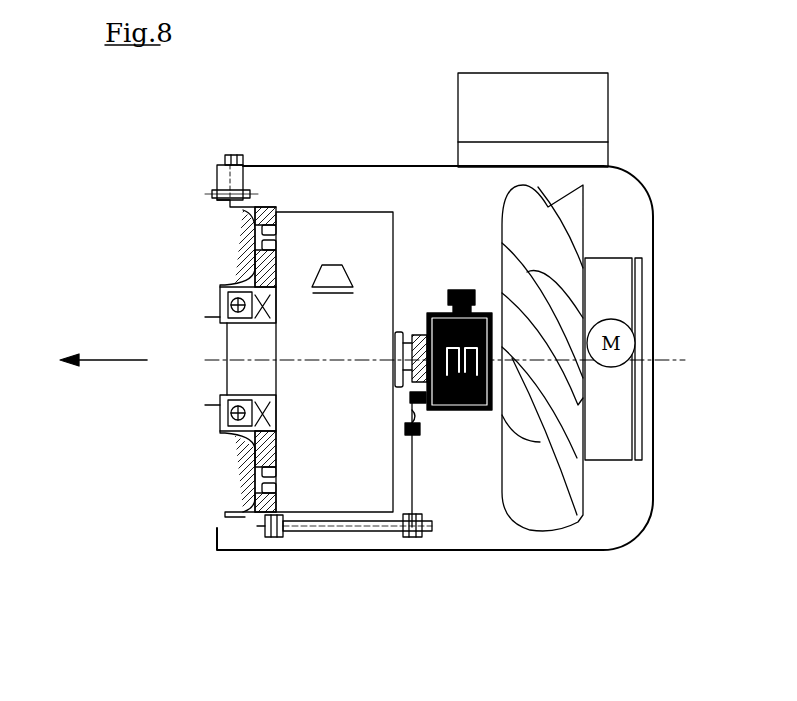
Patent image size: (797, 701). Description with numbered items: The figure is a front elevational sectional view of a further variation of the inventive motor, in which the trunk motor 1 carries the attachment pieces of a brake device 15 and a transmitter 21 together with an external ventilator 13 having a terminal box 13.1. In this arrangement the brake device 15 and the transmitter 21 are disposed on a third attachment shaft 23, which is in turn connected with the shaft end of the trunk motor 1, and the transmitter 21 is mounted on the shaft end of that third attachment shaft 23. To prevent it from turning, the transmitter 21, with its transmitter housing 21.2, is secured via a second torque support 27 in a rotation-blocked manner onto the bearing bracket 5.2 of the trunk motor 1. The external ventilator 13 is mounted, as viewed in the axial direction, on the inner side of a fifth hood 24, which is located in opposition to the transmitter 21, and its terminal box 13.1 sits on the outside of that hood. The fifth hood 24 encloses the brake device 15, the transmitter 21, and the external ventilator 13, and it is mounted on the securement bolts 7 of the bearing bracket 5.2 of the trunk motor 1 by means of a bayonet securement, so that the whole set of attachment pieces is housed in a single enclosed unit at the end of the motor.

The trunk motor 1 is at (32, 370).
The bearing bracket 5.2 is at (257, 268).
The securement bolts 7 is at (236, 155).
The external ventilator 13 is at (538, 507).
The terminal box 13.1 is at (564, 103).
The brake device 15 is at (307, 240).
The transmitter 21 is at (455, 397).
The transmitter housing 21.2 is at (440, 410).
The third attachment shaft 23 is at (402, 257).
The fifth hood 24 is at (655, 488).
The second torque support 27 is at (362, 525).